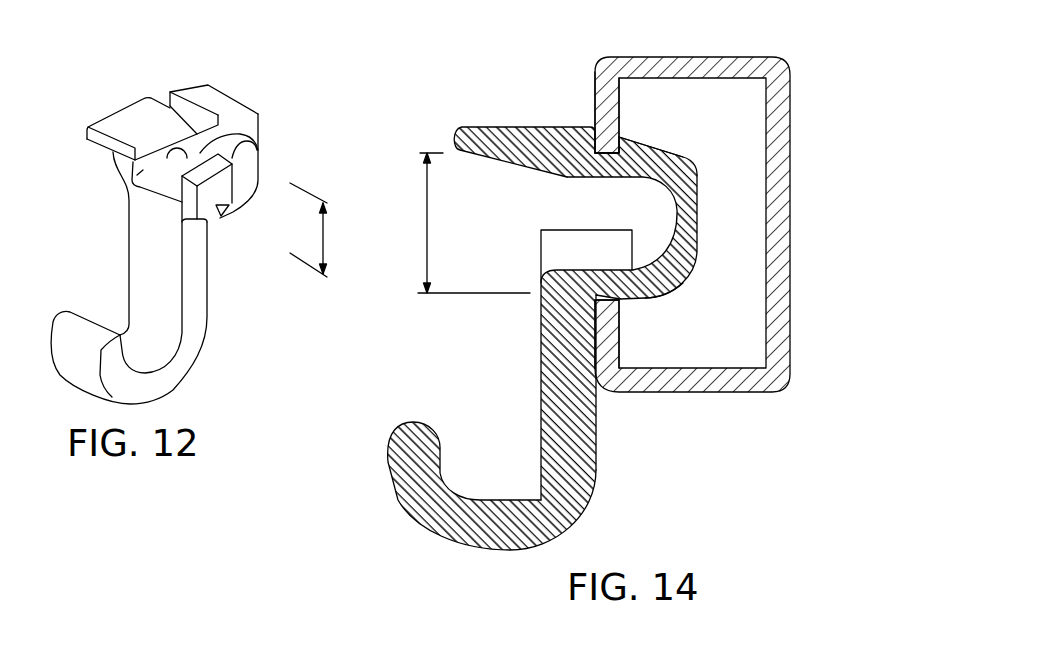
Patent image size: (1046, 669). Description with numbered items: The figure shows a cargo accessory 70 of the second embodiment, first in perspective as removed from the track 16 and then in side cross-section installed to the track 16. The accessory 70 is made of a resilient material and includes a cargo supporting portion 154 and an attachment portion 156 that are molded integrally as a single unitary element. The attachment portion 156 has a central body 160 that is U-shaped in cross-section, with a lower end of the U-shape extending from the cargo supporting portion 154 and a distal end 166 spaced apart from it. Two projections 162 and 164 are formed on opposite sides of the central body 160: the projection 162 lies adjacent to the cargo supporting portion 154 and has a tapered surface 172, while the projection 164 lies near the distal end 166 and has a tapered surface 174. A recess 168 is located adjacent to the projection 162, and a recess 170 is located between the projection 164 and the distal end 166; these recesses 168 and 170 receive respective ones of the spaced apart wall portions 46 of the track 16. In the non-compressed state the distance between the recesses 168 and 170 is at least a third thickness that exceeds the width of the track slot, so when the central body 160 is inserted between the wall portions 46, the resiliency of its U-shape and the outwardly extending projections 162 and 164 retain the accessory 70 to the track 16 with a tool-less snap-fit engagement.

In FIG. 14, the track 16 is at (742, 31).
In FIG. 14, the wall portions 46 is at (594, 103).
In FIG. 12, the accessory 70 is at (97, 95).
In FIG. 14, the accessory 70 is at (485, 104).
In FIG. 12, the cargo supporting portion 154 is at (187, 345).
In FIG. 14, the cargo supporting portion 154 is at (420, 497).
In FIG. 12, the attachment portion 156 is at (247, 137).
In FIG. 14, the attachment portion 156 is at (689, 256).
In FIG. 12, the central body 160 is at (240, 153).
In FIG. 14, the central body 160 is at (673, 203).
In FIG. 12, the projection 162 is at (222, 216).
In FIG. 14, the projection 162 is at (620, 306).
In FIG. 12, the projection 164 is at (187, 97).
In FIG. 14, the projection 164 is at (624, 136).
In FIG. 12, the distal end 166 is at (100, 137).
In FIG. 14, the recess 168 is at (577, 328).
In FIG. 14, the recess 170 is at (606, 140).
In FIG. 14, the tapered surface 172 is at (668, 298).
In FIG. 14, the tapered surface 174 is at (676, 156).